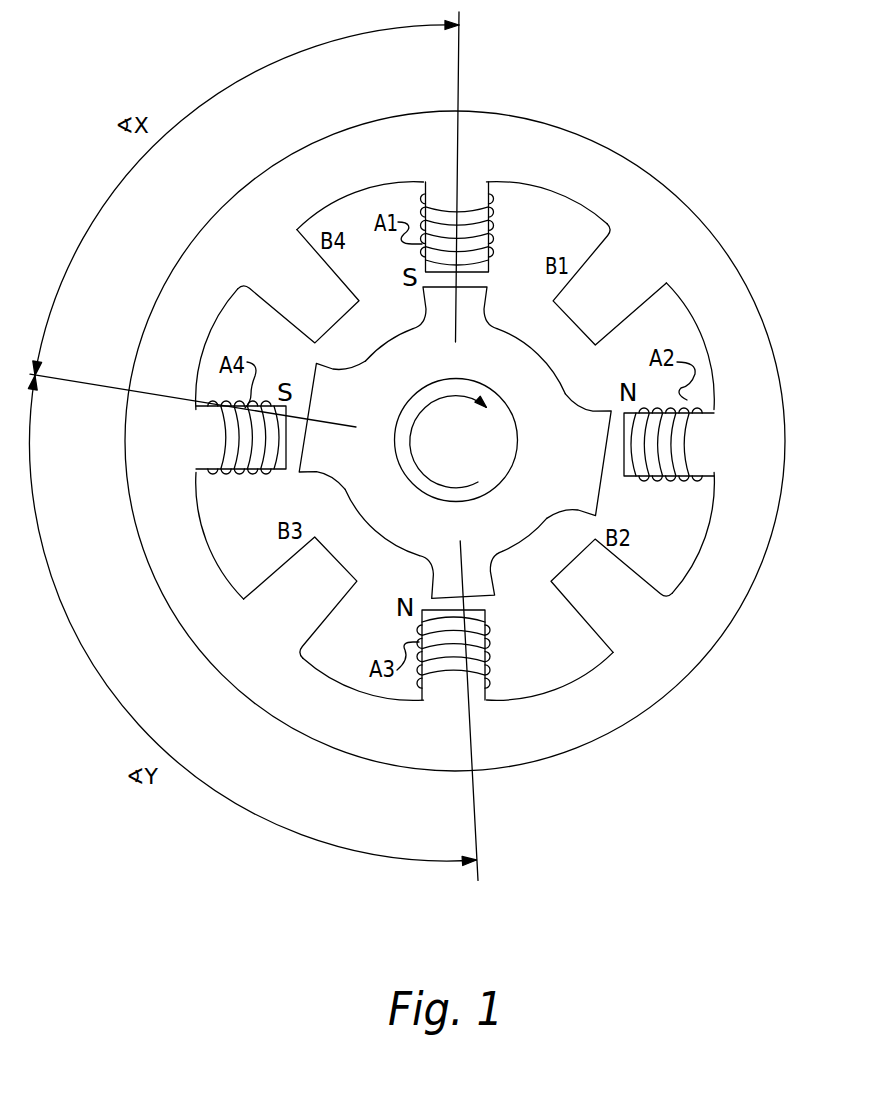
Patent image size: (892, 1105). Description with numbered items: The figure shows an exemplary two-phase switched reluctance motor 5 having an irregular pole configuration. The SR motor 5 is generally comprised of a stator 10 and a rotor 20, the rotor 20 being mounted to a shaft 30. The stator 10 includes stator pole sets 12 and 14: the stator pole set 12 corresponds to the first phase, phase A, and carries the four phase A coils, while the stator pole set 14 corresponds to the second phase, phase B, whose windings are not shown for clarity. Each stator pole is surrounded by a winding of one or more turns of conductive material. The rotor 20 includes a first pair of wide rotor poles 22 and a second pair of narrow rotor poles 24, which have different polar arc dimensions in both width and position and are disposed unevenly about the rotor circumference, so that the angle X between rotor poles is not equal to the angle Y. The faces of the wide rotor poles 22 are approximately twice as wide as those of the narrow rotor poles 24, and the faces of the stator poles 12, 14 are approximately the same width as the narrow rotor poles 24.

The SR motor 5 is at (713, 115).
The stator 10 is at (767, 318).
The stator pole set 12 is at (490, 268).
The stator pole set 14 is at (300, 323).
The rotor 20 is at (465, 458).
The wide rotor poles 22 is at (307, 487).
The narrow rotor poles 24 is at (497, 303).
The shaft 30 is at (443, 455).